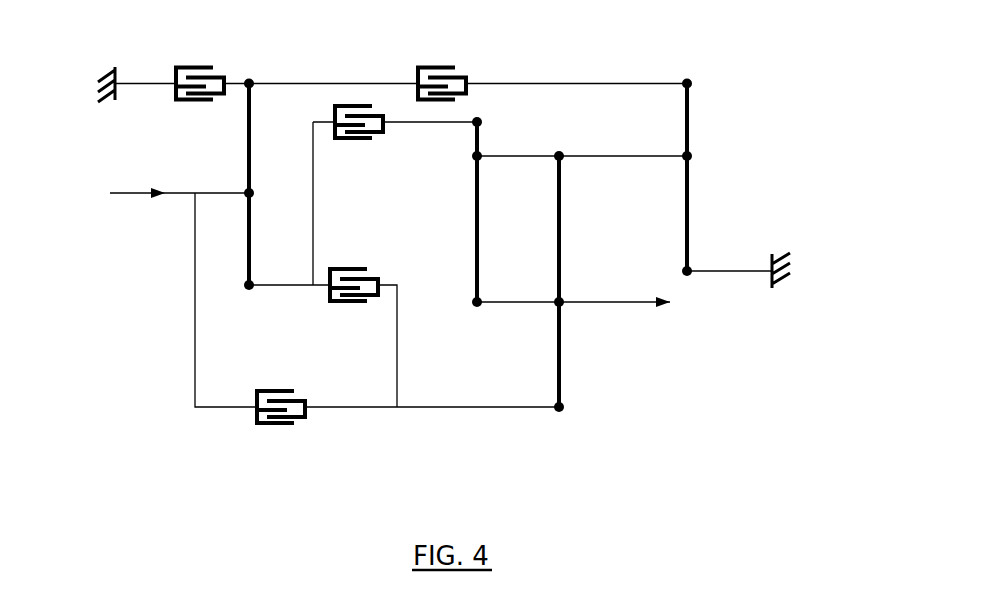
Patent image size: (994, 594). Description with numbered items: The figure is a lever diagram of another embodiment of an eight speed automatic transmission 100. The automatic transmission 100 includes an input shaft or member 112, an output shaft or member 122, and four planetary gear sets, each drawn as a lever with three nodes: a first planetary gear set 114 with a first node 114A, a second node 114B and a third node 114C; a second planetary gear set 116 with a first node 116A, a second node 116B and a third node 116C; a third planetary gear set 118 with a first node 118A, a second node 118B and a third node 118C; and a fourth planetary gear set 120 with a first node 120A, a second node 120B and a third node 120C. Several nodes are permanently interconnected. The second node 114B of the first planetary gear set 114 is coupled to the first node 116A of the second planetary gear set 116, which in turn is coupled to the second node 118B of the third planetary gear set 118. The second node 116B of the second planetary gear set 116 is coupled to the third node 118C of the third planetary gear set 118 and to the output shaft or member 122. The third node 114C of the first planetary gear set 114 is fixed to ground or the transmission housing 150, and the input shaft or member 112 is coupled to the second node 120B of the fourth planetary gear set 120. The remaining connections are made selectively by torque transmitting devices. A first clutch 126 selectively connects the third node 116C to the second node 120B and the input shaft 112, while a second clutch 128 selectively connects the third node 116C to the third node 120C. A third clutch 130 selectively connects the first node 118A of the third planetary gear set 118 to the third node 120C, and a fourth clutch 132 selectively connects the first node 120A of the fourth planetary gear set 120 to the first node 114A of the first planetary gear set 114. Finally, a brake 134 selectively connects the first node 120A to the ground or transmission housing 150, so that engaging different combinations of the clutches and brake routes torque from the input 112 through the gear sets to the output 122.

The automatic transmission 100 is at (575, 36).
The input shaft or member 112 is at (130, 194).
The first planetary gear set 114 is at (677, 181).
The first node of the first planetary gear set 114A is at (689, 80).
The second node of the first planetary gear set 114B is at (690, 154).
The third node of the first planetary gear set 114C is at (690, 268).
The second planetary gear set 116 is at (586, 436).
The first node of the second planetary gear set 116A is at (561, 154).
The second node of the second planetary gear set 116B is at (561, 298).
The third node of the second planetary gear set 116C is at (566, 402).
The third planetary gear set 118 is at (459, 316).
The first node of the third planetary gear set 118A is at (480, 122).
The second node of the third planetary gear set 118B is at (475, 156).
The third node of the third planetary gear set 118C is at (480, 300).
The fourth planetary gear set 120 is at (236, 300).
The first node of the fourth planetary gear set 120A is at (250, 78).
The second node of the fourth planetary gear set 120B is at (252, 190).
The third node of the fourth planetary gear set 120C is at (252, 283).
The output shaft or member 122 is at (643, 304).
The first clutch 126 is at (287, 425).
The second clutch 128 is at (362, 302).
The third clutch 130 is at (358, 140).
The fourth clutch 132 is at (448, 67).
The brake 134 is at (200, 101).
The ground or transmission housing 150 is at (118, 100).